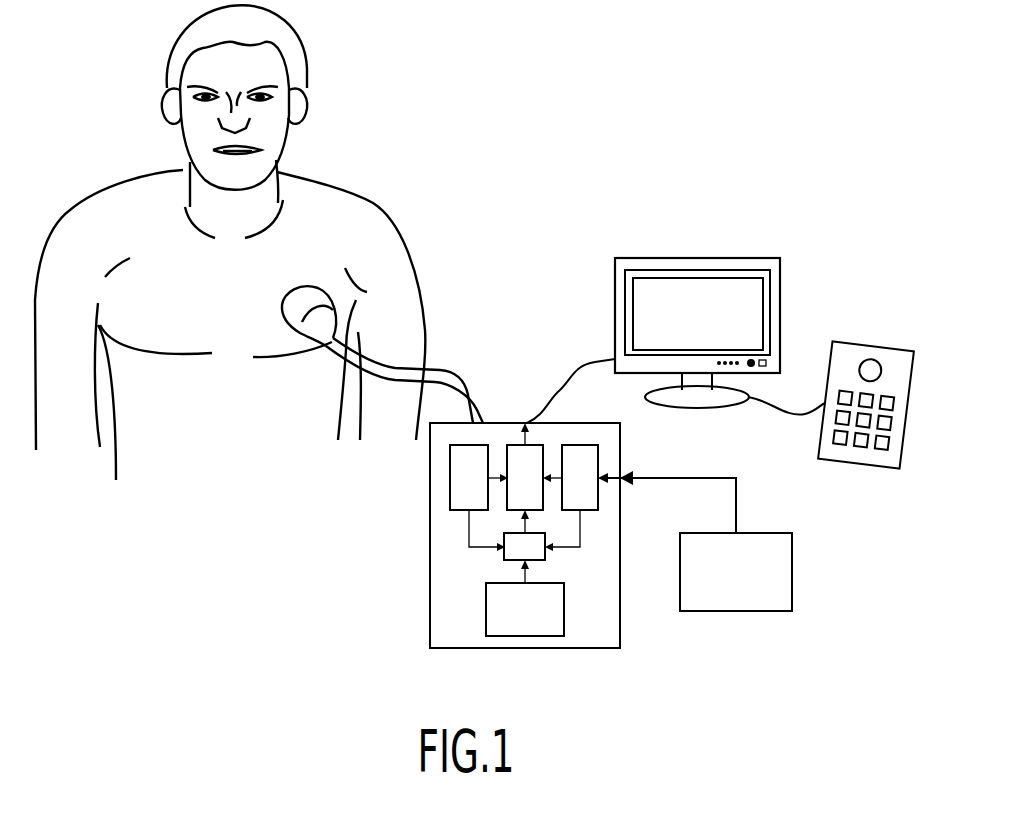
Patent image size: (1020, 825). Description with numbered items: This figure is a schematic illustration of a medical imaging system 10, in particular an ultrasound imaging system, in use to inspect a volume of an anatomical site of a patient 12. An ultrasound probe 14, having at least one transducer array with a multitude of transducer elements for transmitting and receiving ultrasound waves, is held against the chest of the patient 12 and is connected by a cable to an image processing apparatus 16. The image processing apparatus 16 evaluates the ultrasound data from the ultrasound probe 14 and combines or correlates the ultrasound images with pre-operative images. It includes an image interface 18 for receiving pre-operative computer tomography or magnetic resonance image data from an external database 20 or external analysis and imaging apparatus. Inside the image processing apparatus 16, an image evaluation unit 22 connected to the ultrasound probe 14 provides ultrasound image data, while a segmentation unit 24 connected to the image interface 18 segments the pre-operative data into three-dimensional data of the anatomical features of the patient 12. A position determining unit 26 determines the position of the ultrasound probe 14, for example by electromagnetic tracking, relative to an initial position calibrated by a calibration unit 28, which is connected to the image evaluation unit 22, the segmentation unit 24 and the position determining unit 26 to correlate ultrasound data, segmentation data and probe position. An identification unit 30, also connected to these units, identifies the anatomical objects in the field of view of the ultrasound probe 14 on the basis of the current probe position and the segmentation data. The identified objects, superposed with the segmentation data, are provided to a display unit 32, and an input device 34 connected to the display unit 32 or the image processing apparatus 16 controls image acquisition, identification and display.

The medical imaging system 10 is at (685, 121).
The patient 12 is at (360, 207).
The ultrasound probe 14 is at (307, 300).
The image processing apparatus 16 is at (428, 517).
The image interface 18 is at (626, 474).
The external database 20 is at (792, 563).
The image evaluation unit 22 is at (463, 482).
The segmentation unit 24 is at (590, 495).
The position determining unit 26 is at (540, 623).
The calibration unit 28 is at (512, 557).
The identification unit 30 is at (520, 460).
The display unit 32 is at (710, 258).
The input device 34 is at (843, 362).